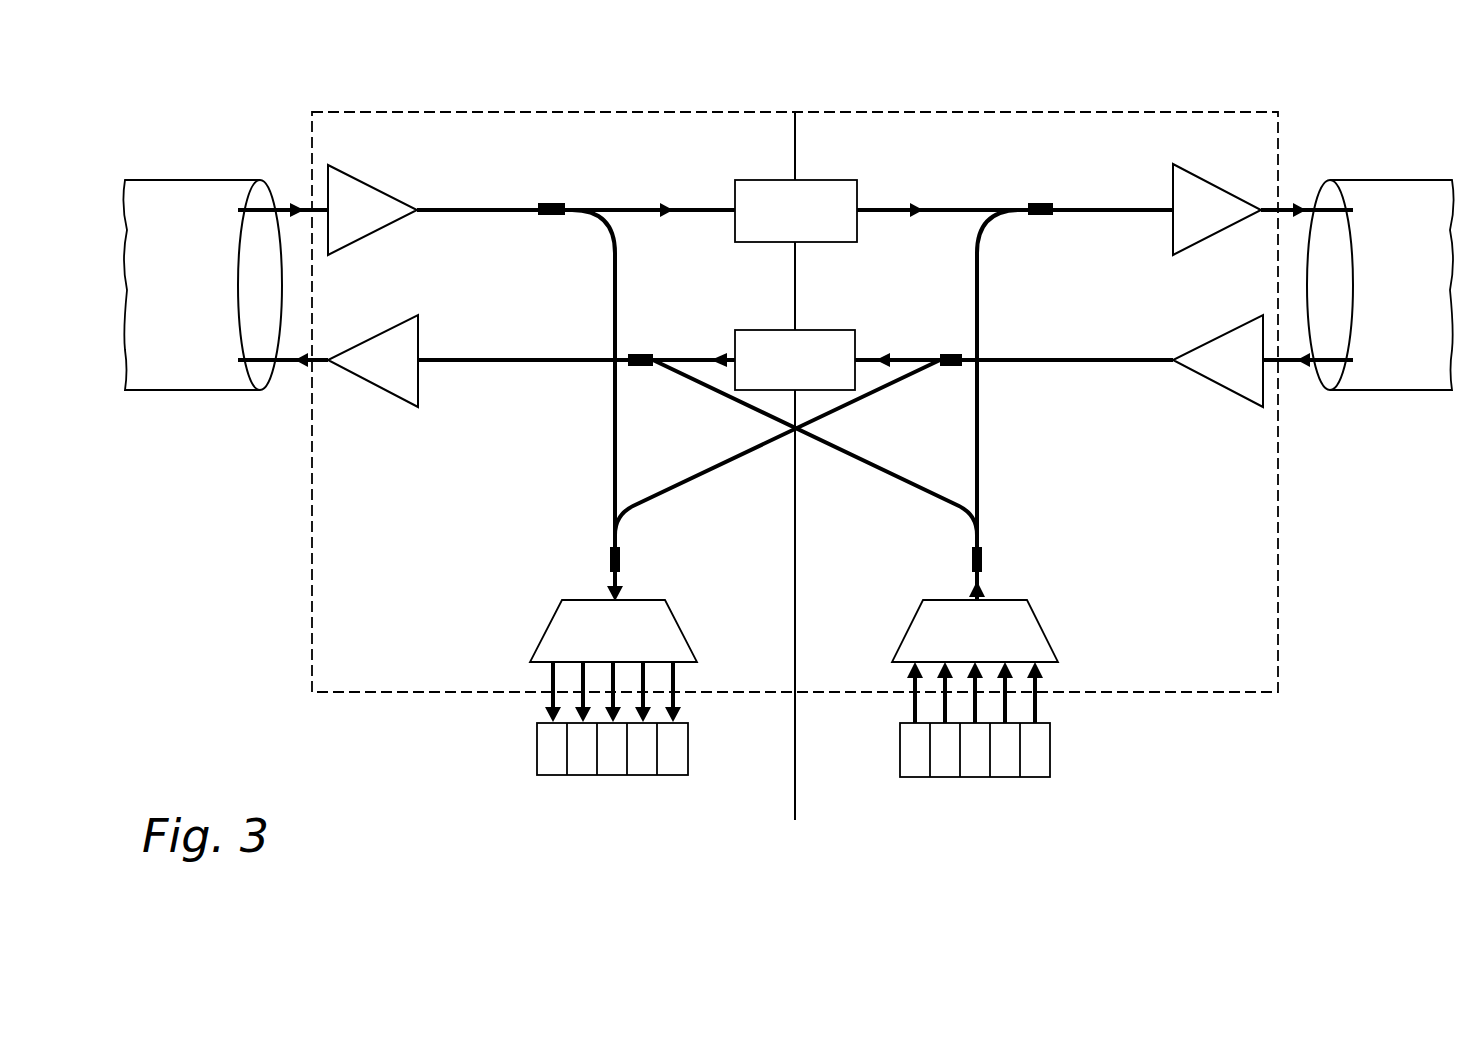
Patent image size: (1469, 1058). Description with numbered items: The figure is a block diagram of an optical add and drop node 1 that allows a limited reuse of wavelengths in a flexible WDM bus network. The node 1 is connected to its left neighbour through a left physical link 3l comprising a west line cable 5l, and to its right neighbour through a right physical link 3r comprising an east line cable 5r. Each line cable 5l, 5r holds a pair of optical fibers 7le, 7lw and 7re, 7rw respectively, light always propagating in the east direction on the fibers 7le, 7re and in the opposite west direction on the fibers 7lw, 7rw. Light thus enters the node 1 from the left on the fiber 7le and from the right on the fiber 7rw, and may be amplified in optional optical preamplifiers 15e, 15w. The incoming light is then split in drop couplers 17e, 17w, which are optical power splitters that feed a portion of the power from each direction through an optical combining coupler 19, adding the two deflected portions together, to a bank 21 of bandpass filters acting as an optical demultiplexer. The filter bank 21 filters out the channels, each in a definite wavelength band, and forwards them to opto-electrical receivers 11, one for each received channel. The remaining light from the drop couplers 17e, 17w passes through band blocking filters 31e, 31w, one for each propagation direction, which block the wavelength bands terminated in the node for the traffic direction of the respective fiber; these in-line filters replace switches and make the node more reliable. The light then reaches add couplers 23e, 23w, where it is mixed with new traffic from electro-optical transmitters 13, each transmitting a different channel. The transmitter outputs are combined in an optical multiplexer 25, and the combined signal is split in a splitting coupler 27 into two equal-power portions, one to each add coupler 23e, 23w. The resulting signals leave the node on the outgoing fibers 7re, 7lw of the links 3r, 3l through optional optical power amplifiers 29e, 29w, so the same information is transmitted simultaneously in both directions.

The add and drop node 1 is at (312, 523).
The left physical link 3l is at (207, 122).
The right physical link 3r is at (1388, 136).
The west line cable 5l is at (200, 392).
The east line cable 5r is at (1415, 392).
The left east-direction fiber 7le is at (284, 200).
The left west-direction fiber 7lw is at (286, 367).
The right east-direction fiber 7re is at (1299, 200).
The right west-direction fiber 7rw is at (1290, 369).
The east optical preamplifier 15e is at (373, 195).
The west optical preamplifier 15w is at (1195, 378).
The east drop coupler 17e is at (556, 203).
The west drop coupler 17w is at (956, 368).
The optical combining coupler 19 is at (608, 562).
The bank of filters 21 is at (678, 621).
The east add coupler 23e is at (1040, 218).
The west add coupler 23w is at (648, 367).
The optical multiplexer 25 is at (1013, 600).
The splitting coupler 27 is at (982, 560).
The east optical power amplifier 29e is at (1225, 185).
The west optical power amplifier 29w is at (386, 384).
The east band blocking filter 31e is at (848, 184).
The west band blocking filter 31w is at (802, 330).
The receivers 11 is at (683, 728).
The transmitters 13 is at (1045, 727).